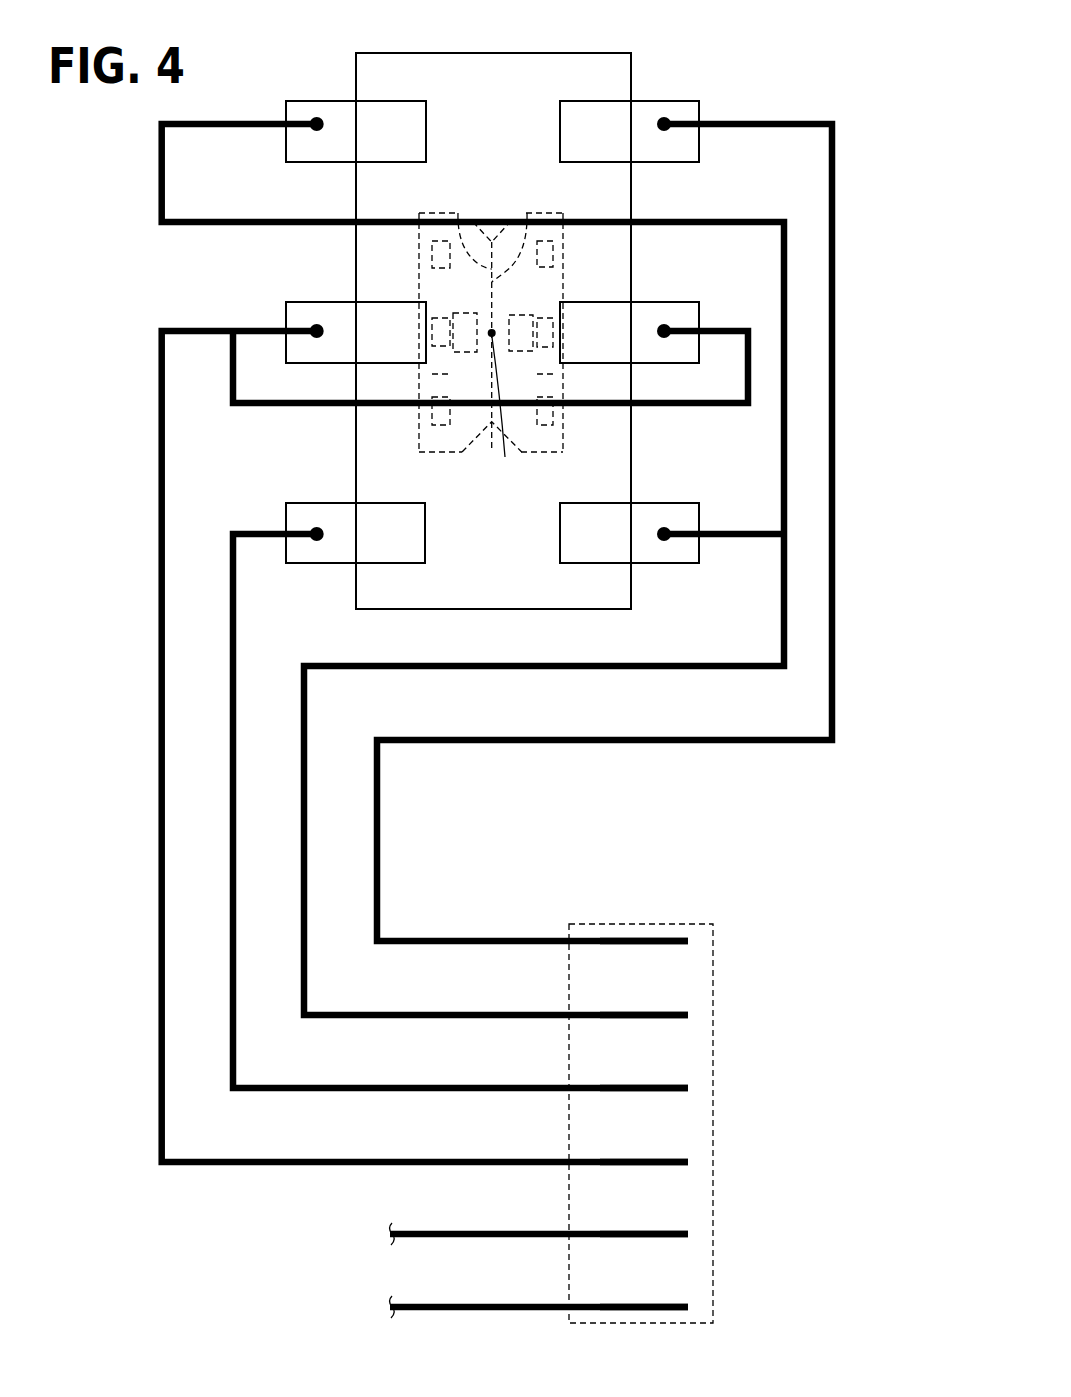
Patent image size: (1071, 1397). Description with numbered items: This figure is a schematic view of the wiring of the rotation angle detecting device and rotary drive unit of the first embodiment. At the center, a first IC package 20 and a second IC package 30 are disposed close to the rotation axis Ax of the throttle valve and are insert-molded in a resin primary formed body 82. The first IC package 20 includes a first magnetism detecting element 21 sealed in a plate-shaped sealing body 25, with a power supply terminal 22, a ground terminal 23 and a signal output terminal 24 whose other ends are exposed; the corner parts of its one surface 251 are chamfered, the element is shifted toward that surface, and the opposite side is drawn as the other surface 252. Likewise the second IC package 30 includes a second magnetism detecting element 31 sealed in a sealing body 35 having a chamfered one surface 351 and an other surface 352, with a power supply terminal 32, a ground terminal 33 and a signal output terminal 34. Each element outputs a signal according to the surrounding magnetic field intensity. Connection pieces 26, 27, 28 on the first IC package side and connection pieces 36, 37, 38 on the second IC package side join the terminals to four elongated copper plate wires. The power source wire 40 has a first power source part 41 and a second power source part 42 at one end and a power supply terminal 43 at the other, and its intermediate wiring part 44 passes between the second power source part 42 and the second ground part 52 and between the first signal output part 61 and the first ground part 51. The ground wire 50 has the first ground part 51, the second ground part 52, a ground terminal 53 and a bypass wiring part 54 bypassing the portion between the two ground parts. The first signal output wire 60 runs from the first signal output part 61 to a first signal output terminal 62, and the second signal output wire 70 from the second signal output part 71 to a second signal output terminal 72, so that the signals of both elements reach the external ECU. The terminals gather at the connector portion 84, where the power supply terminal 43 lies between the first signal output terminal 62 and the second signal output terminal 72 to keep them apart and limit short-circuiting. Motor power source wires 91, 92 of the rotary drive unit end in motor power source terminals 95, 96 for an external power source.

The first IC package 20 is at (563, 268).
The first magnetism detecting element 21 is at (533, 333).
The power supply terminal 22 is at (553, 422).
The ground terminal 23 is at (545, 318).
The signal output terminal 24 is at (553, 252).
The sealing body 25 is at (545, 376).
The connection piece 26 is at (612, 553).
The connection piece 27 is at (627, 352).
The connection piece 28 is at (600, 120).
The second IC package 30 is at (420, 272).
The second magnetism detecting element 31 is at (455, 335).
The power supply terminal 32 is at (431, 252).
The ground terminal 33 is at (436, 318).
The signal output terminal 34 is at (431, 419).
The sealing body 35 is at (440, 376).
The connection piece 36 is at (372, 120).
The connection piece 37 is at (354, 349).
The connection piece 38 is at (392, 553).
The power source wire 40 is at (304, 803).
The first power source part 41 is at (664, 541).
The second power source part 42 is at (317, 118).
The power supply terminal 43 is at (688, 1015).
The intermediate wiring part 44 is at (490, 218).
The ground wire 50 is at (161, 803).
The first ground part 51 is at (664, 331).
The second ground part 52 is at (316, 331).
The ground terminal 53 is at (688, 1162).
The bypass wiring part 54 is at (473, 405).
The first signal output wire 60 is at (377, 842).
The first signal output part 61 is at (664, 118).
The first signal output terminal 62 is at (688, 941).
The second signal output wire 70 is at (232, 840).
The second signal output part 71 is at (317, 541).
The second signal output terminal 72 is at (688, 1088).
The primary formed body 82 is at (486, 62).
The connector portion 84 is at (630, 924).
The motor power source wire 91 is at (437, 1238).
The motor power source wire 92 is at (477, 1311).
The motor power source terminal 95 is at (688, 1234).
The motor power source terminal 96 is at (688, 1307).
The one surface 251 is at (453, 213).
The second coil end 252 is at (563, 388).
The one surface 351 is at (530, 213).
The other surface 352 is at (420, 388).
The rotation axis Ax is at (504, 364).